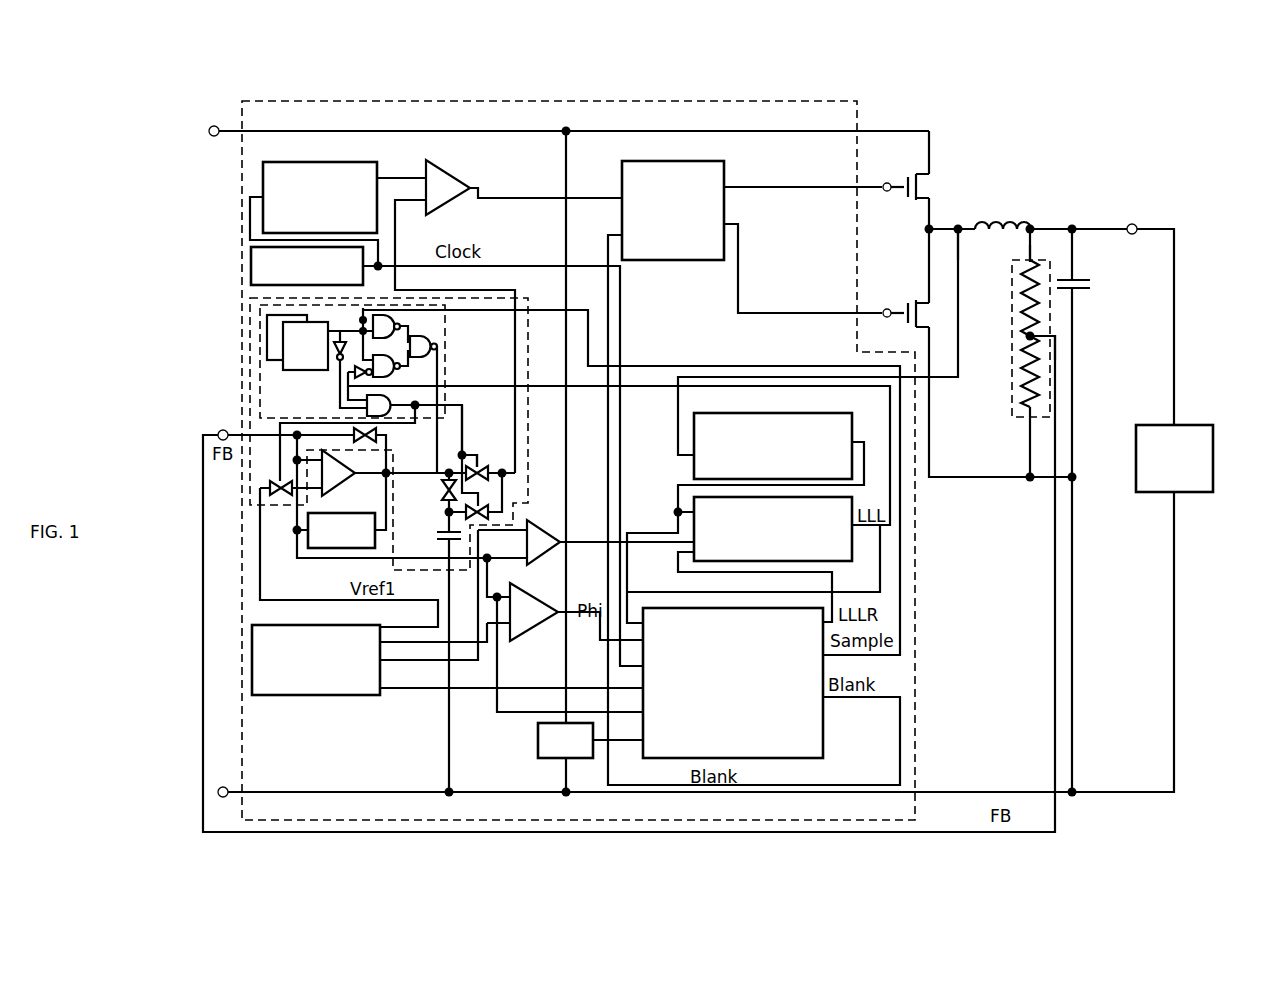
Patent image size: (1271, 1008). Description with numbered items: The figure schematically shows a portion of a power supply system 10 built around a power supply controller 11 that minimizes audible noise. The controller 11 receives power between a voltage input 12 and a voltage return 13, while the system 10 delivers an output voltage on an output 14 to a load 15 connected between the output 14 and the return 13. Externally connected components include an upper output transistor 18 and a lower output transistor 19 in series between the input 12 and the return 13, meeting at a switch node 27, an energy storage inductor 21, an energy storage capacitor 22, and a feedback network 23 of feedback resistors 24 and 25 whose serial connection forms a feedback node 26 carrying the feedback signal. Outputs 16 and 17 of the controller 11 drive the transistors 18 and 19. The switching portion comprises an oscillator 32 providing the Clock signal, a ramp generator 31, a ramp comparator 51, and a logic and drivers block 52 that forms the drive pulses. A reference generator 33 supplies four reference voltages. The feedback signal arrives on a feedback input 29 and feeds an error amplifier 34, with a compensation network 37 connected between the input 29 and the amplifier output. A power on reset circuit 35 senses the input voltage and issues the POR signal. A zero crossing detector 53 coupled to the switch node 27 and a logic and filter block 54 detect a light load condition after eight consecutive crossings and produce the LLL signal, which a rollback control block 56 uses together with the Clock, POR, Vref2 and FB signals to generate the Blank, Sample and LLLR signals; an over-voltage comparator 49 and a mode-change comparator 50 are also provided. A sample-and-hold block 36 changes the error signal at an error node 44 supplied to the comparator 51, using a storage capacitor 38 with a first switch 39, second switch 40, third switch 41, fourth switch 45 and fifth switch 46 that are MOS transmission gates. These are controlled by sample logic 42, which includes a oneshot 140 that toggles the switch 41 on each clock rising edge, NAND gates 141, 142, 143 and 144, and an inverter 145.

The power supply system 10 is at (950, 881).
The power supply controller 11 is at (930, 757).
The voltage input 12 is at (213, 138).
The voltage return 13 is at (218, 790).
The output 14 is at (1133, 224).
The load 15 is at (1205, 425).
The output of controller 16 is at (923, 143).
The output of controller 17 is at (936, 281).
The upper output transistor 18 is at (918, 183).
The lower output transistor 19 is at (940, 318).
The energy storage inductor 21 is at (995, 222).
The energy storage capacitor 22 is at (1093, 284).
The feedback network 23 is at (1033, 256).
The feedback resistor 24 is at (1025, 312).
The feedback resistor 25 is at (1035, 400).
The feedback node 26 is at (1035, 336).
The switch node 27 is at (959, 226).
The feedback input 29 is at (218, 431).
The ramp generator 31 is at (322, 160).
The oscillator 32 is at (250, 268).
The reference generator 33 is at (306, 696).
The error amplifier 34 is at (336, 476).
The power on reset circuit 35 is at (538, 738).
The sample-and-hold block 36 is at (530, 296).
The compensation network 37 is at (380, 540).
The storage capacitor 38 is at (442, 532).
The first switch 39 is at (378, 435).
The second switch 40 is at (276, 491).
The third switch 41 is at (443, 498).
The sample logic 42 is at (443, 300).
The error node 44 is at (502, 468).
The fourth switch 45 is at (472, 462).
The fifth switch 46 is at (490, 508).
The over-voltage comparator 49 is at (540, 598).
The mode-change comparator 50 is at (540, 520).
The ramp comparator 51 is at (448, 170).
The logic and drivers block 52 is at (663, 160).
The zero crossing detector 53 is at (692, 466).
The logic and filter block 54 is at (690, 520).
The rollback control block 56 is at (725, 607).
The oneshot 140 is at (300, 320).
The NAND gate 141 is at (437, 347).
The NAND gate 142 is at (400, 322).
The NAND gate 143 is at (400, 370).
The NAND gate 144 is at (330, 382).
The inverter 145 is at (355, 384).